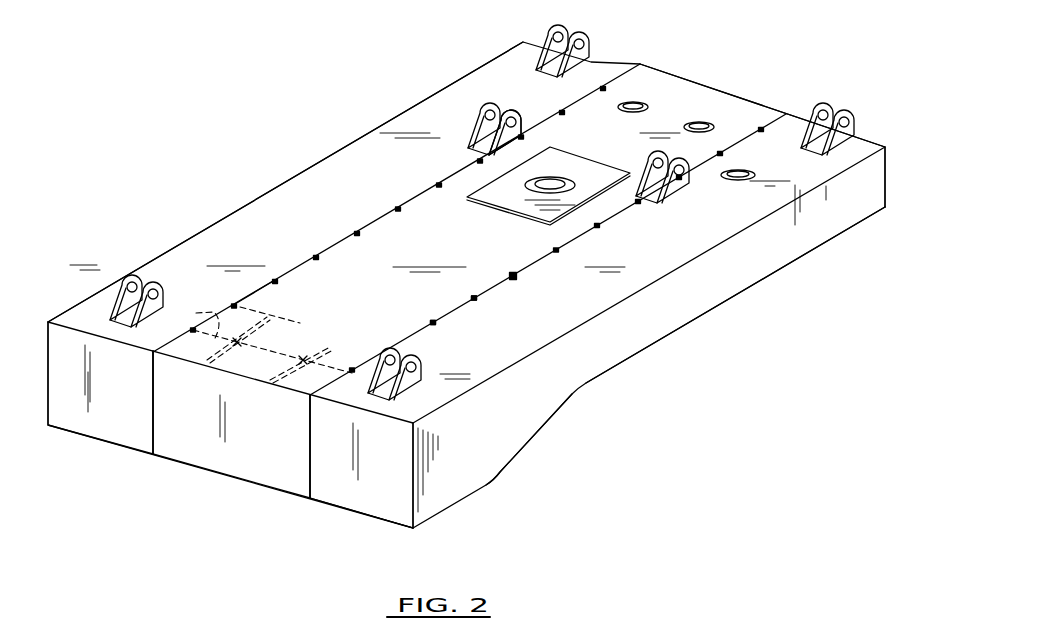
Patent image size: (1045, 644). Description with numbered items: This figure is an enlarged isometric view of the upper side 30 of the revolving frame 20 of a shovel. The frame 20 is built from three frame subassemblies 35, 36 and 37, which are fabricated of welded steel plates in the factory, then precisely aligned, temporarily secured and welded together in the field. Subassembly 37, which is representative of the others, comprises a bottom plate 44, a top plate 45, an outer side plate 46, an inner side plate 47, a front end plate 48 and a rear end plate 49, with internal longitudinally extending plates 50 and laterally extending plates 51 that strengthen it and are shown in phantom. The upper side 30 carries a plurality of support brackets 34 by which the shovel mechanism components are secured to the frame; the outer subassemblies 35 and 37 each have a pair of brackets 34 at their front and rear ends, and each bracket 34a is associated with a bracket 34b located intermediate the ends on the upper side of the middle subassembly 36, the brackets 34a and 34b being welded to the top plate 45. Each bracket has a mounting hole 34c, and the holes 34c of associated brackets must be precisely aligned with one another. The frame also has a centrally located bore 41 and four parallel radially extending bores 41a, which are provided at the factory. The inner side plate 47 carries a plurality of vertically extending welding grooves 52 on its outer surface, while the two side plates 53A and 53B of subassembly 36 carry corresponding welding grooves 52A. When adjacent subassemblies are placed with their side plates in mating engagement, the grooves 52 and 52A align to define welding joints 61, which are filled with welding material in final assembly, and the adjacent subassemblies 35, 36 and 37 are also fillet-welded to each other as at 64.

The revolving frame 20 is at (722, 327).
The upper side 30 is at (325, 156).
The support brackets 34 is at (581, 36).
The bracket 34a is at (524, 130).
The bracket 34b is at (465, 140).
The mounting hole 34c is at (585, 46).
The frame subassembly 35 is at (96, 448).
The frame subassembly 36 is at (218, 478).
The frame subassembly 37 is at (375, 522).
The centrally located bore 41 is at (536, 187).
The bores 41a is at (698, 121).
The bottom plate 44 is at (640, 358).
The top plate 45 is at (612, 268).
The outer side plate 46 is at (567, 402).
The inner side plate 47 is at (369, 228).
The front end plate 48 is at (355, 488).
The rear end plate 49 is at (886, 182).
The longitudinally extending plates 50 is at (303, 358).
The laterally extending plates 51 is at (237, 319).
The welding grooves 52 is at (317, 255).
The welding grooves 52A is at (513, 271).
The side plate 53A is at (150, 436).
The side plate 53B is at (307, 468).
The welding joints 61 is at (432, 322).
The fillet weld 64 is at (256, 292).